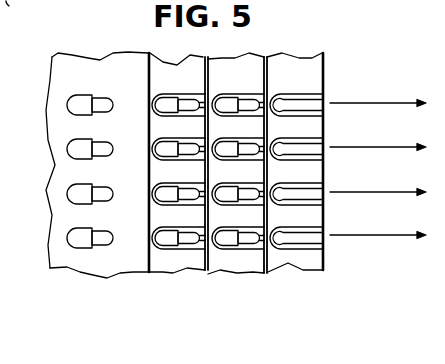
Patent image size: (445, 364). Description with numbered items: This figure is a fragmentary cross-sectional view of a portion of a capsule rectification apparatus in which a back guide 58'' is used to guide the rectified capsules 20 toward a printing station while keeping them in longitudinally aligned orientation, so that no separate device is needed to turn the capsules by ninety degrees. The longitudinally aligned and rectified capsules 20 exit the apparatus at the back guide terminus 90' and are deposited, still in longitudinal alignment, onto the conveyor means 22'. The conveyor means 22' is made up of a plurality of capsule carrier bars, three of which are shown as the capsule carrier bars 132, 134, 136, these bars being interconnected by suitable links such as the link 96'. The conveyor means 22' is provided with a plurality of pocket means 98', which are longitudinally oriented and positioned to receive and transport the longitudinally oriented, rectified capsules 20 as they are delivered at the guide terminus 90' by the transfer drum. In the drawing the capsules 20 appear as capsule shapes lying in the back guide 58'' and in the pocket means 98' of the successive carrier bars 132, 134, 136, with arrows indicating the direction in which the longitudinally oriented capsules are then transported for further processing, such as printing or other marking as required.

The link 96' is at (22, 12).
The back guide 58'' is at (97, 142).
The back guide terminus 90' is at (161, 152).
The capsule carrier bar 132 is at (190, 70).
The capsule carrier bar 134 is at (235, 68).
The conveyor means 22' is at (299, 143).
The capsule carrier bar 136 is at (319, 68).
The capsule 20 is at (82, 242).
The pocket means 98' is at (177, 197).